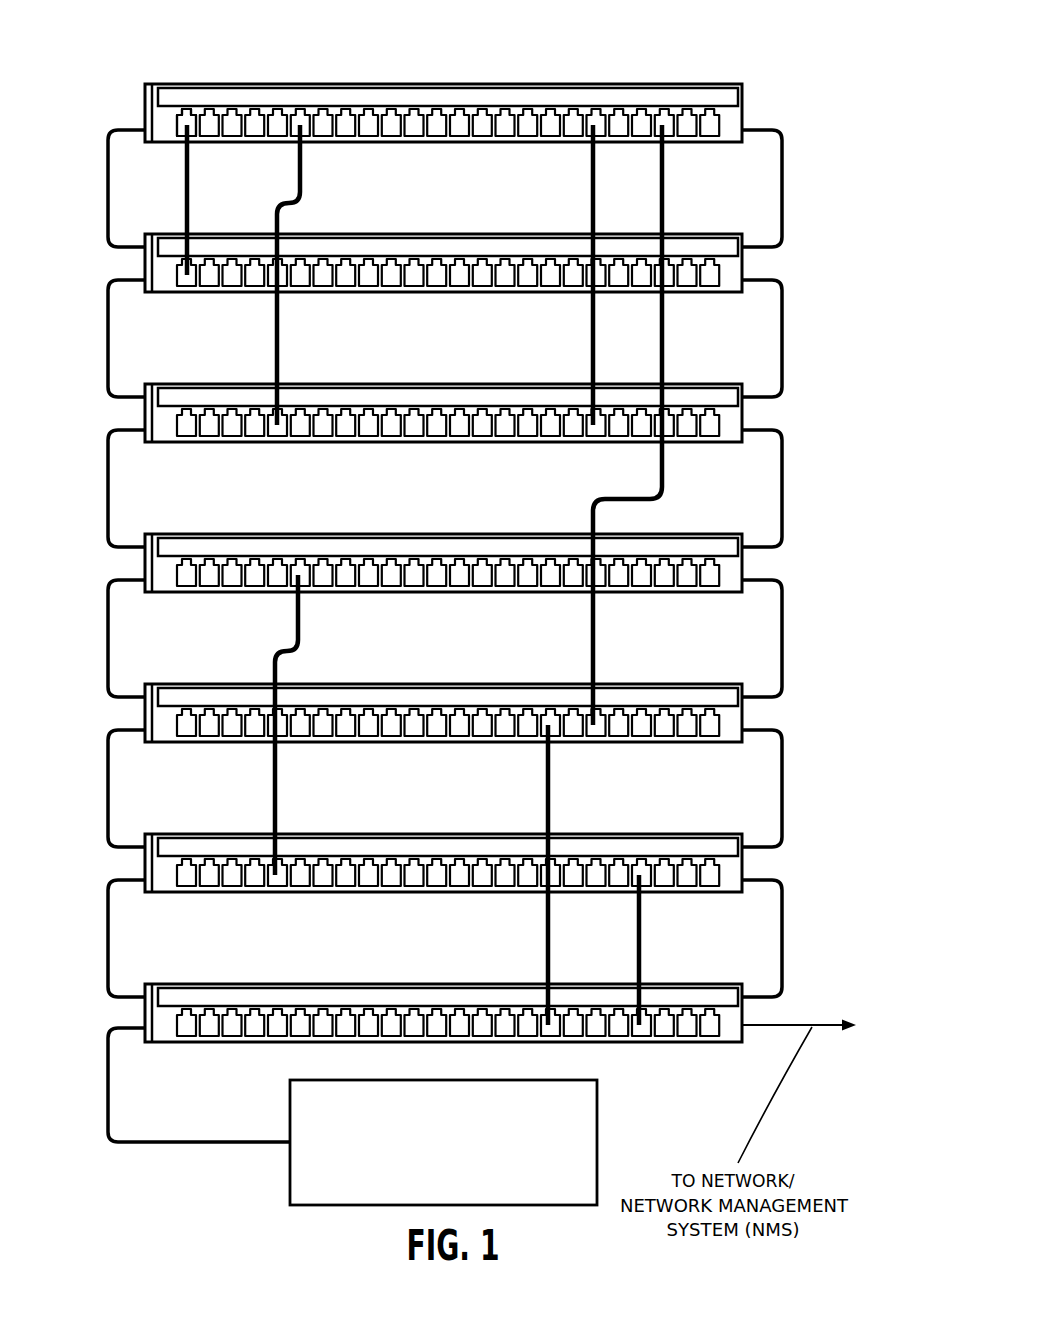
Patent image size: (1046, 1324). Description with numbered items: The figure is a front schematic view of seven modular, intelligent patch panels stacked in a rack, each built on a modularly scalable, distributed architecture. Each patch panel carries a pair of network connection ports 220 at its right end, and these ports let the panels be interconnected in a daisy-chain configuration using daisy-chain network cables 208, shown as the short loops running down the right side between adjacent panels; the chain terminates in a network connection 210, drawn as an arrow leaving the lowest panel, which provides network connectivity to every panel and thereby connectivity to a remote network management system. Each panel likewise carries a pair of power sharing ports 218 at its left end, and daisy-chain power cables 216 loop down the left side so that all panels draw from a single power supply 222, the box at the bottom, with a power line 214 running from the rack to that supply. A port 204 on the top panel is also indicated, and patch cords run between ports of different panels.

The port 204 is at (186, 112).
The daisy-chain network cable 208 is at (808, 940).
The network connection 210 is at (828, 1028).
The power line 214 is at (108, 1096).
The daisy-chain power cable 216 is at (108, 942).
The power sharing port 218 is at (145, 128).
The network connection port 220 is at (745, 95).
The power supply 222 is at (288, 1187).